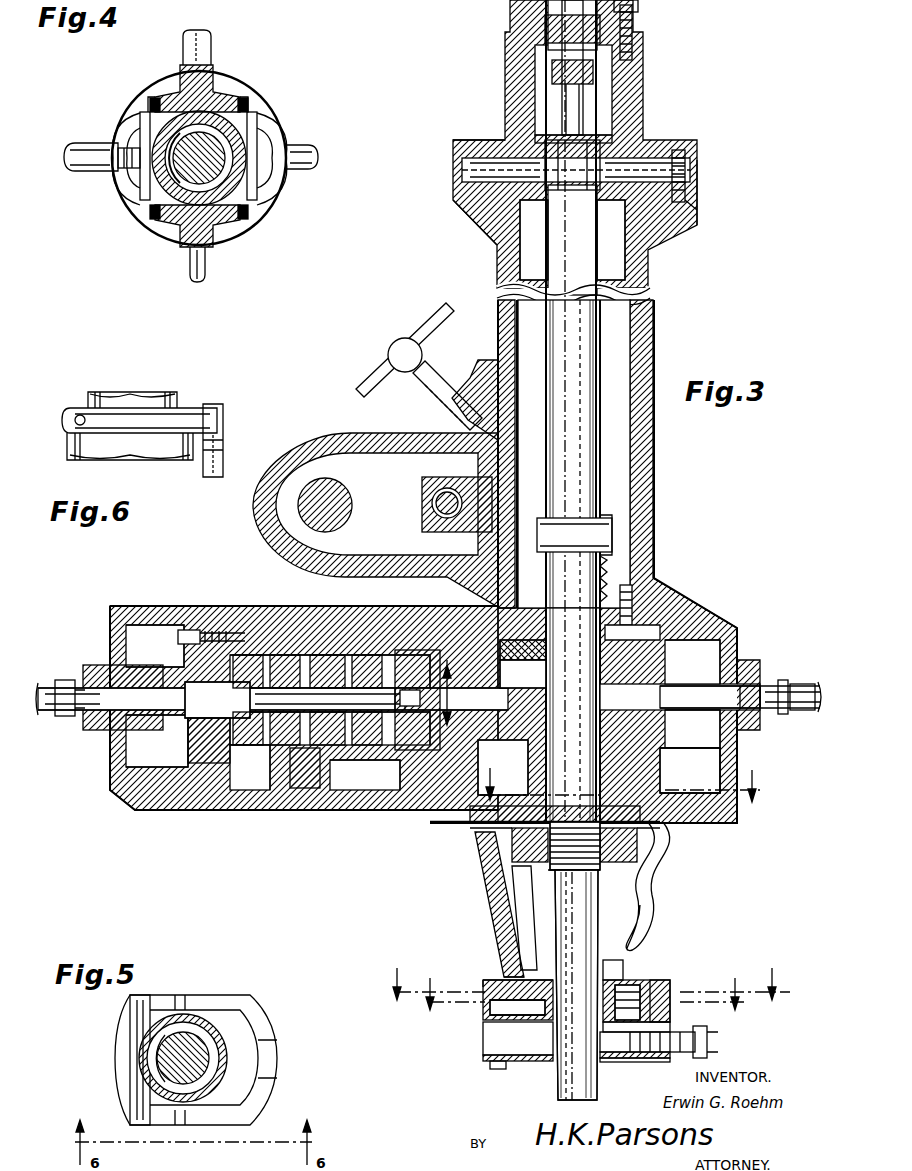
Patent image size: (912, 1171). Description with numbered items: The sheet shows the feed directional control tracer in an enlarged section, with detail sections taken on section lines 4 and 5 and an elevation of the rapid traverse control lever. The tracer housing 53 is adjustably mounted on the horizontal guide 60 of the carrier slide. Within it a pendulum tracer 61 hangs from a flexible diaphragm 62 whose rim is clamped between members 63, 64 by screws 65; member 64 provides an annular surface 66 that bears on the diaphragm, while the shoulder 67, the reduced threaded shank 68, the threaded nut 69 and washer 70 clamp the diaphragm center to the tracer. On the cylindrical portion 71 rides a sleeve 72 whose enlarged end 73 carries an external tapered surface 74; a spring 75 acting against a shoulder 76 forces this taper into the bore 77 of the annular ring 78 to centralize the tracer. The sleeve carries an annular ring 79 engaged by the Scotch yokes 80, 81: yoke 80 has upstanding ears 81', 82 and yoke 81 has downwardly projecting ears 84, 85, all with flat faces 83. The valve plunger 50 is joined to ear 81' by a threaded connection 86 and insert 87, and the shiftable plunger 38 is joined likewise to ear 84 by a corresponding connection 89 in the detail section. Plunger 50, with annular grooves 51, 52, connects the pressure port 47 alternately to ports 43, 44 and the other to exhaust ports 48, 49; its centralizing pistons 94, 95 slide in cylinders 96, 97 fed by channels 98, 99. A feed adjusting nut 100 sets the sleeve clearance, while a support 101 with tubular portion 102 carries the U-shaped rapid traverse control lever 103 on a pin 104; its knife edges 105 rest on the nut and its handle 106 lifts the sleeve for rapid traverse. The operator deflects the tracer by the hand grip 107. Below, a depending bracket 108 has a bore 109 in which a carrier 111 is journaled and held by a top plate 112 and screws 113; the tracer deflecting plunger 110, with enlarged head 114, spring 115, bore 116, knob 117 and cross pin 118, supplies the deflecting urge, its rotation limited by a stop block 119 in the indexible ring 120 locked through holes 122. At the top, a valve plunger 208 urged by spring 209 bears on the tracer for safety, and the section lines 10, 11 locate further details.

In FIG. 4, the shiftable plunger 38 is at (210, 42).
In FIG. 3, the port 43 is at (265, 655).
In FIG. 3, the port 44 is at (330, 655).
In FIG. 3, the pressure port 47 is at (288, 655).
In FIG. 3, the exhaust port 48 is at (245, 760).
In FIG. 3, the exhaust port 49 is at (368, 655).
In FIG. 4, the valve plunger 50 is at (92, 166).
In FIG. 3, the valve plunger 50 is at (185, 708).
In FIG. 3, the annular groove 51 is at (305, 790).
In FIG. 3, the annular groove 52 is at (330, 790).
In FIG. 3, the tracer housing 53 is at (655, 458).
In FIG. 3, the horizontal guide 60 is at (352, 432).
In FIG. 3, the pendulum tracer 61 is at (600, 438).
In FIG. 3, the flexible diaphragm 62 is at (625, 165).
In FIG. 3, the member 63 is at (640, 165).
In FIG. 3, the member 64 is at (672, 205).
In FIG. 3, the screw 65 is at (688, 178).
In FIG. 3, the annular surface 66 is at (572, 240).
In FIG. 3, the shoulder 67 is at (560, 190).
In FIG. 3, the reduced threaded shank 68 is at (540, 140).
In FIG. 3, the threaded nut 69 is at (545, 160).
In FIG. 3, the washer 70 is at (455, 145).
In FIG. 4, the cylindrical portion 71 is at (235, 195).
In FIG. 3, the cylindrical portion 71 is at (490, 860).
In FIG. 3, the sleeve 72 is at (610, 570).
In FIG. 3, the enlarged end 73 is at (630, 590).
In FIG. 3, the external tapered surface 74 is at (640, 605).
In FIG. 3, the spring 75 is at (615, 540).
In FIG. 3, the shoulder 76 is at (600, 520).
In FIG. 3, the bore 77 is at (520, 648).
In FIG. 3, the annular ring 78 is at (535, 665).
In FIG. 4, the annular ring 79 is at (232, 145).
In FIG. 3, the annular ring 79 is at (683, 770).
In FIG. 4, the Scotch yoke 80 is at (165, 225).
In FIG. 3, the Scotch yoke 80 is at (503, 767).
In FIG. 3, the Scotch yoke 81 is at (695, 603).
In FIG. 4, the upstanding ear 81' is at (117, 187).
In FIG. 4, the upstanding ear 82 is at (278, 180).
In FIG. 4, the flat face 83 is at (256, 124).
In FIG. 4, the downwardly projecting ear 84 is at (215, 78).
In FIG. 4, the downwardly projecting ear 85 is at (236, 100).
In FIG. 4, the threaded connection 86 is at (120, 150).
In FIG. 4, the insert 87 is at (130, 200).
In FIG. 4, the pin 89 is at (206, 268).
In FIG. 4, the centralizing piston 94 is at (302, 153).
In FIG. 3, the centralizing piston 94 is at (748, 686).
In FIG. 3, the centralizing piston 95 is at (125, 722).
In FIG. 3, the cylinder 96 is at (785, 680).
In FIG. 3, the cylinder 97 is at (120, 668).
In FIG. 3, the channel 98 is at (810, 686).
In FIG. 3, the channel 99 is at (65, 688).
In FIG. 6, the feed adjusting nut 100 is at (70, 458).
In FIG. 3, the feed adjusting nut 100 is at (525, 900).
In FIG. 5, the support 101 is at (128, 1035).
In FIG. 3, the support 101 is at (475, 818).
In FIG. 5, the tubular portion 102 is at (215, 1040).
In FIG. 3, the tubular portion 102 is at (480, 830).
In FIG. 6, the rapid traverse control lever 103 is at (198, 406).
In FIG. 5, the rapid traverse control lever 103 is at (262, 1095).
In FIG. 6, the pin 104 is at (78, 416).
In FIG. 5, the pin 104 is at (140, 1052).
In FIG. 3, the pin 104 is at (520, 845).
In FIG. 6, the knife edge 105 is at (130, 438).
In FIG. 5, the knife edge 105 is at (190, 1000).
In FIG. 6, the handle 106 is at (224, 450).
In FIG. 3, the handle 106 is at (660, 890).
In FIG. 3, the hand grip 107 is at (570, 1080).
In FIG. 3, the depending bracket 108 is at (510, 940).
In FIG. 3, the bore 109 is at (508, 955).
In FIG. 3, the tracer deflecting plunger 110 is at (618, 1058).
In FIG. 3, the carrier 111 is at (510, 1062).
In FIG. 3, the top plate 112 is at (632, 990).
In FIG. 3, the screw 113 is at (640, 975).
In FIG. 3, the enlarged head 114 is at (608, 1062).
In FIG. 3, the spring 115 is at (655, 1053).
In FIG. 3, the bore 116 is at (665, 995).
In FIG. 3, the knob 117 is at (705, 1050).
In FIG. 3, the cross pin 118 is at (660, 1028).
In FIG. 3, the stop block 119 is at (500, 1015).
In FIG. 3, the indexible ring 120 is at (490, 985).
In FIG. 3, the hole 122 is at (485, 1030).
In FIG. 3, the valve plunger 208 is at (562, 55).
In FIG. 3, the spring 209 is at (545, 12).
In FIG. 3, the section line 4- 4 is at (564, 692).
In FIG. 3, the section line 5- 5 is at (624, 798).
In FIG. 3, the section line 10- 10 is at (587, 999).
In FIG. 3, the section line 11- 11 is at (584, 1010).